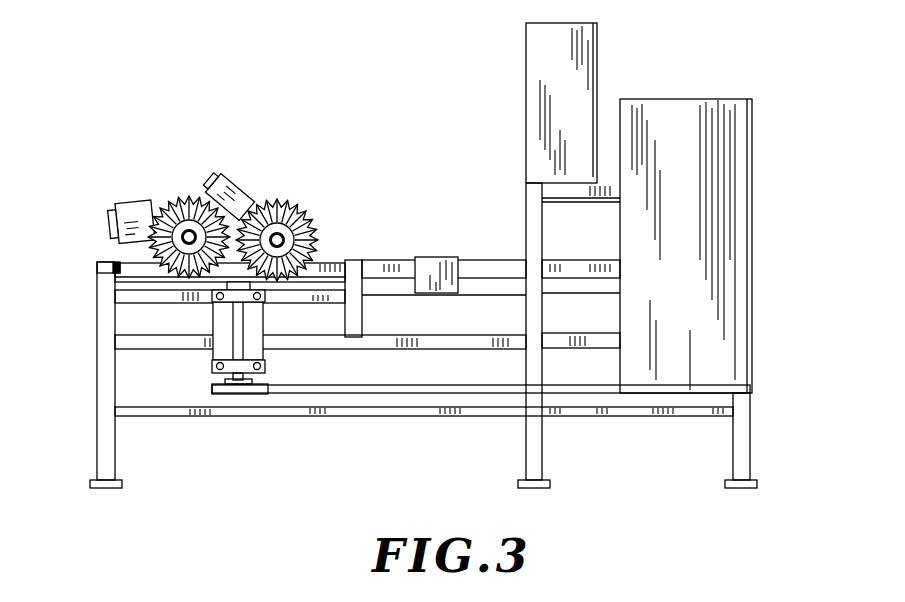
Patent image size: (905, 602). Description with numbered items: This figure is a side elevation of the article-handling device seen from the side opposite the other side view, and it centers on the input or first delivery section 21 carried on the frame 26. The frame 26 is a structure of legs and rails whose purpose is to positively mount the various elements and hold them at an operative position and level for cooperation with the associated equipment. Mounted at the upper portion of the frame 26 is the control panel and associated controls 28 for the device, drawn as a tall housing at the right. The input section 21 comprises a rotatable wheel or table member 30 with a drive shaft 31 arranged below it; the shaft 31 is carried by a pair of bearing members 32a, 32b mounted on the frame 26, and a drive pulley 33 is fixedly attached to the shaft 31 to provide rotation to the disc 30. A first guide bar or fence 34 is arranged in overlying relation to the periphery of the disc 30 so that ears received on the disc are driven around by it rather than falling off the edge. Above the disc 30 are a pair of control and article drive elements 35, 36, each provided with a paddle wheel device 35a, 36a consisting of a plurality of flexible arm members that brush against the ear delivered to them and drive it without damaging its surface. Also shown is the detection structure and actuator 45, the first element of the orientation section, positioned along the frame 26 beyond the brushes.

The input or first delivery section 21 is at (232, 202).
The frame 26 is at (80, 406).
The control panel and associated controls 28 is at (527, 72).
The rotatable wheel or table member 30 is at (133, 273).
The drive shaft 31 is at (247, 333).
The bearing member 32a is at (230, 305).
The bearing member 32b is at (247, 367).
The drive pulley 33 is at (225, 383).
The first guide bar or fence 34 is at (115, 268).
The control and article drive element 35 is at (130, 203).
The paddle wheel device 35a is at (205, 192).
The control and article drive element 36 is at (237, 188).
The paddle wheel device 36a is at (320, 220).
The detection structure and actuator 45 is at (432, 263).